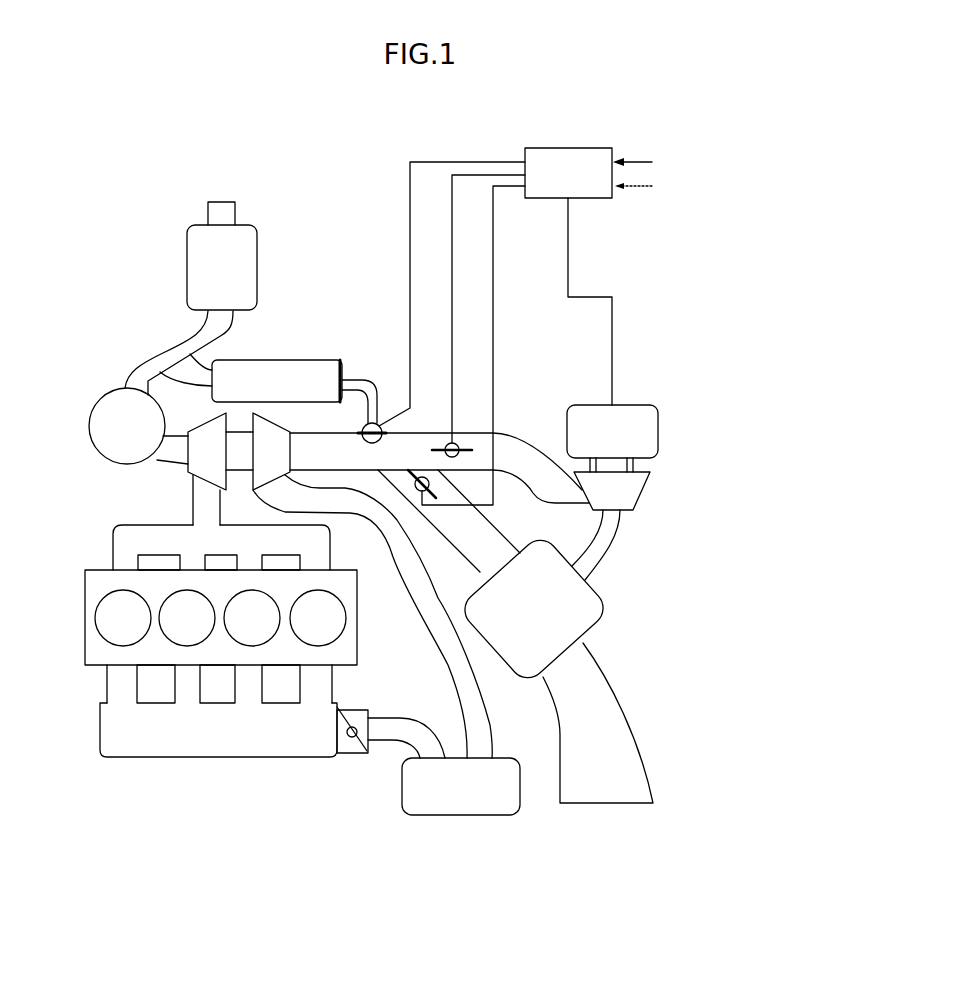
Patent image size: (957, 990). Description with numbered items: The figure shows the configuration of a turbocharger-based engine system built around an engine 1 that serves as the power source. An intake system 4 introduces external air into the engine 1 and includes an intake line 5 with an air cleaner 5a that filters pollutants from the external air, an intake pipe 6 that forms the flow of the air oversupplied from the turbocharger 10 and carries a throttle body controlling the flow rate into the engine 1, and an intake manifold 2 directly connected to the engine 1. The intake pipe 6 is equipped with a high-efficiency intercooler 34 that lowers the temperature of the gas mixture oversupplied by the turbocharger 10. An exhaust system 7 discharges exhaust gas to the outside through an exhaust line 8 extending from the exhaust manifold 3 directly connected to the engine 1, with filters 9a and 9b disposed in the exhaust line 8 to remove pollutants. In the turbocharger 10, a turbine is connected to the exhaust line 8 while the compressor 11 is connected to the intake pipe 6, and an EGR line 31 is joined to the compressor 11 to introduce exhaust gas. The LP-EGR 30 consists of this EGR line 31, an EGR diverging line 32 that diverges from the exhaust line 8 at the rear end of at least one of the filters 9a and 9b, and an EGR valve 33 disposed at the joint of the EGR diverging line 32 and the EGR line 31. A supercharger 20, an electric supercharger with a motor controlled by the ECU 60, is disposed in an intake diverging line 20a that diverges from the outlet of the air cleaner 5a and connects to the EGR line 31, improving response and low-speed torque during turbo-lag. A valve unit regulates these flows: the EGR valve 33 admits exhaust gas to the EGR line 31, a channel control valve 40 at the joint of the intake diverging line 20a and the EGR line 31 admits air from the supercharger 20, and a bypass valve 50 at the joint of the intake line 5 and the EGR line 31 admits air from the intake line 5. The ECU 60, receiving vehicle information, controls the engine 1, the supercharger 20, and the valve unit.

The engine 1 is at (93, 643).
The intake manifold 2 is at (118, 725).
The exhaust manifold 3 is at (128, 541).
The intake system 4 is at (508, 639).
The intake line 5 is at (588, 609).
The air cleaner 5a is at (543, 610).
The intake pipe 6 is at (485, 737).
The exhaust system 7 is at (140, 333).
The exhaust line 8 is at (177, 362).
The filter 9a is at (111, 389).
The filter 9b is at (205, 263).
The turbocharger 10 is at (150, 474).
The compressor 11 is at (273, 445).
The supercharger 20 is at (624, 467).
The intake diverging line 20a is at (610, 545).
The LP-EGR 30 is at (400, 405).
The EGR line 31 is at (323, 450).
The EGR diverging line 32 is at (357, 377).
The EGR valve 33 is at (381, 422).
The intercooler 34 is at (468, 803).
The channel control valve 40 is at (457, 446).
The bypass valve 50 is at (420, 492).
The ECU 60 is at (570, 147).